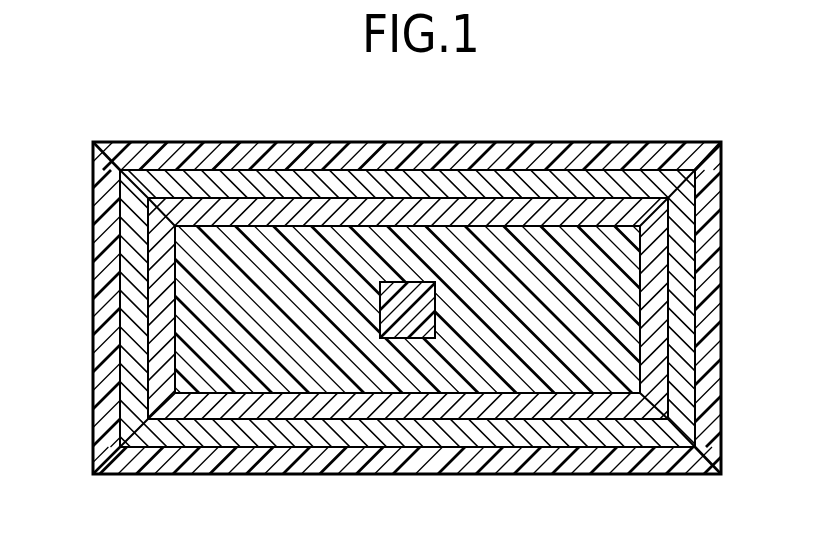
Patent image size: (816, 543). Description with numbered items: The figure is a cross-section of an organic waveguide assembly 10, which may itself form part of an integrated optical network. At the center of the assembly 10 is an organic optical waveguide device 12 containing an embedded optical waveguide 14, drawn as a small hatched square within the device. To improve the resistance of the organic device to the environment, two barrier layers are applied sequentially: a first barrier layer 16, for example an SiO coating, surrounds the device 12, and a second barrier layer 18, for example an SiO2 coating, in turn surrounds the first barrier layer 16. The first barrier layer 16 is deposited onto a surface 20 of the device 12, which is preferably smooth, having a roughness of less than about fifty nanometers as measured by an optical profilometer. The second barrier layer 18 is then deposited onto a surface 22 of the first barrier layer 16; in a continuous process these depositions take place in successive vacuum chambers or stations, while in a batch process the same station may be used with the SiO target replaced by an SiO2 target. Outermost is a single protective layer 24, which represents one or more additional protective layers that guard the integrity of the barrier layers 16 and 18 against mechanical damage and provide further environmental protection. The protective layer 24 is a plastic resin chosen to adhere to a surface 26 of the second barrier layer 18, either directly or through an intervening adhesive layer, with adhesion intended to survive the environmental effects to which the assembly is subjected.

The waveguide assembly 10 is at (117, 121).
The organic optical waveguide device 12 is at (232, 364).
The optical waveguide 14 is at (408, 307).
The first barrier layer 16 is at (168, 246).
The second barrier layer 18 is at (131, 328).
The surface of the device 20 is at (327, 393).
The surface of the first barrier layer 22 is at (442, 419).
The protective layer 24 is at (710, 248).
The surface of the second barrier layer 26 is at (698, 322).